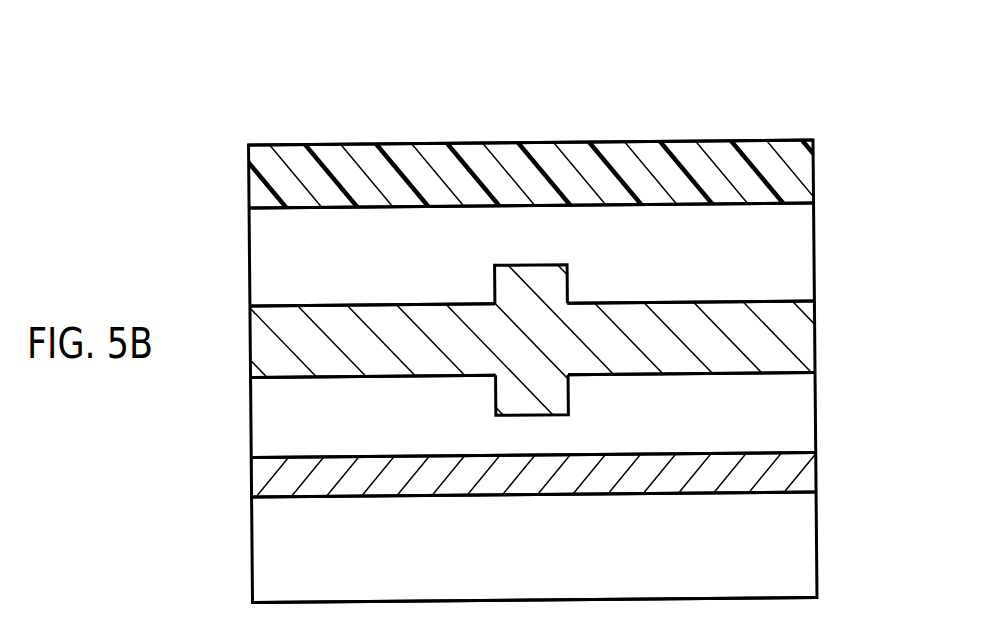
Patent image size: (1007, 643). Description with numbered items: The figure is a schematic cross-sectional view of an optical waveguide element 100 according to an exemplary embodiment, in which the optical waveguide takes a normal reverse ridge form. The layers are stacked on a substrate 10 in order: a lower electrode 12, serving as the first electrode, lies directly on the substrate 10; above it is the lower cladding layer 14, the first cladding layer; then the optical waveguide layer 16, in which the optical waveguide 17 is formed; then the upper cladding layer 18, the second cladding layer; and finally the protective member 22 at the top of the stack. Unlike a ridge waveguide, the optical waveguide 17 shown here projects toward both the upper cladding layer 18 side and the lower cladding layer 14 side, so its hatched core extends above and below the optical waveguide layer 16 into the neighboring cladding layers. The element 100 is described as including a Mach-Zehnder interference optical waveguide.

The optical waveguide element 100 is at (775, 124).
The protective member 22 is at (801, 163).
The upper cladding layer 18 is at (801, 250).
The optical waveguide 17 is at (550, 286).
The optical waveguide layer 16 is at (801, 333).
The lower cladding layer 14 is at (801, 396).
The lower electrode 12 is at (801, 474).
The substrate 10 is at (803, 544).